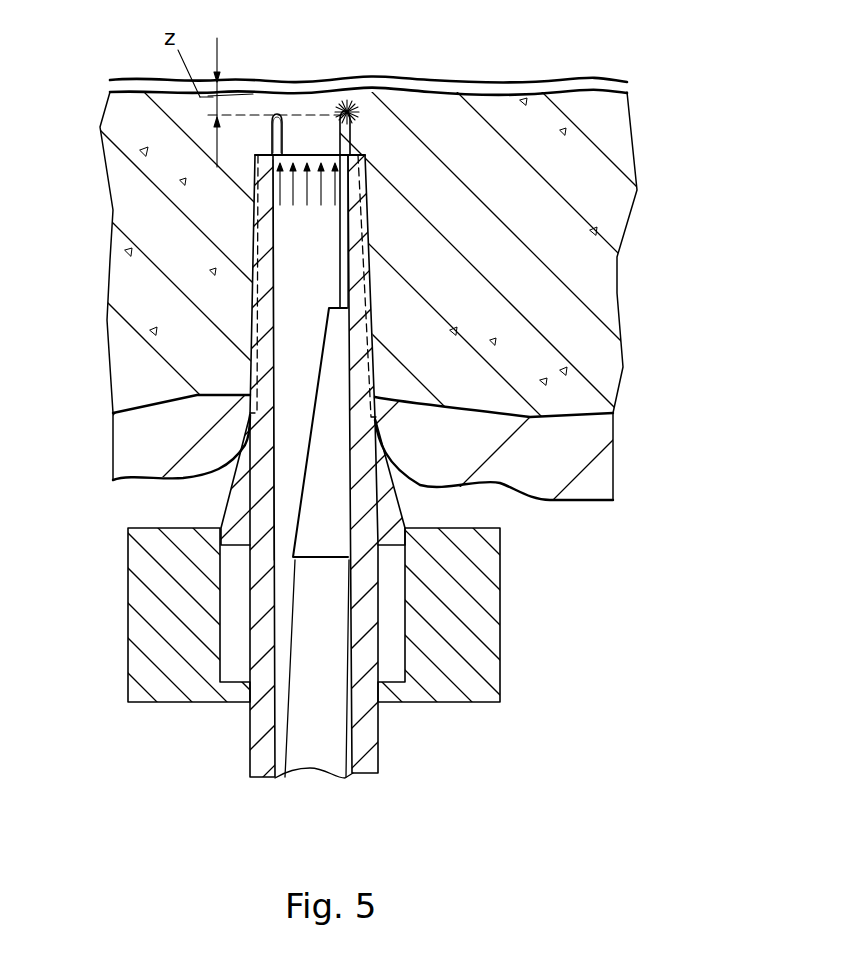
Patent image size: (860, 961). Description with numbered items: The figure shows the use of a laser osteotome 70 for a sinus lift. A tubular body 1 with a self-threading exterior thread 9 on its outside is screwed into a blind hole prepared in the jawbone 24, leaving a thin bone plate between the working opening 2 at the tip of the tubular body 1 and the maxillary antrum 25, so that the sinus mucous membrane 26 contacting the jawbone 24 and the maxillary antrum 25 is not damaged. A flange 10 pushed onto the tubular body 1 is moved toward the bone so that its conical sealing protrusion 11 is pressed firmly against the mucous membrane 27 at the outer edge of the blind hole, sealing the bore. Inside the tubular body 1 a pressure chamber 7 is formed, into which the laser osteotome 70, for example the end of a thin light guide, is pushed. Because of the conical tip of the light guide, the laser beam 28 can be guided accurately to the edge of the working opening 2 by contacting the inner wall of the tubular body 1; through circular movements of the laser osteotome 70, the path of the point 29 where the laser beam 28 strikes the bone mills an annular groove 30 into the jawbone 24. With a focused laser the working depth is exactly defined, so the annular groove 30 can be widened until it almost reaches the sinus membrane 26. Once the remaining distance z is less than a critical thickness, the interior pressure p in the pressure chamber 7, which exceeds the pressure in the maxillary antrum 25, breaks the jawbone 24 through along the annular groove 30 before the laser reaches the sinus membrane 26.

The tubular body 1 is at (362, 730).
The working opening 2 is at (314, 154).
The pressure chamber 7 is at (297, 348).
The self-threading exterior thread 9 is at (257, 242).
The flange 10 is at (468, 673).
The conical sealing protrusion 11 is at (247, 502).
The jawbone 24 is at (502, 262).
The maxillary antrum 25 is at (561, 44).
The sinus mucous membrane 26 is at (283, 88).
The mucous membrane 27 is at (543, 445).
The laser beam 28 is at (340, 272).
The point of incidence 29 is at (362, 98).
The annular groove 30 is at (285, 133).
The laser osteotome 70 is at (333, 492).